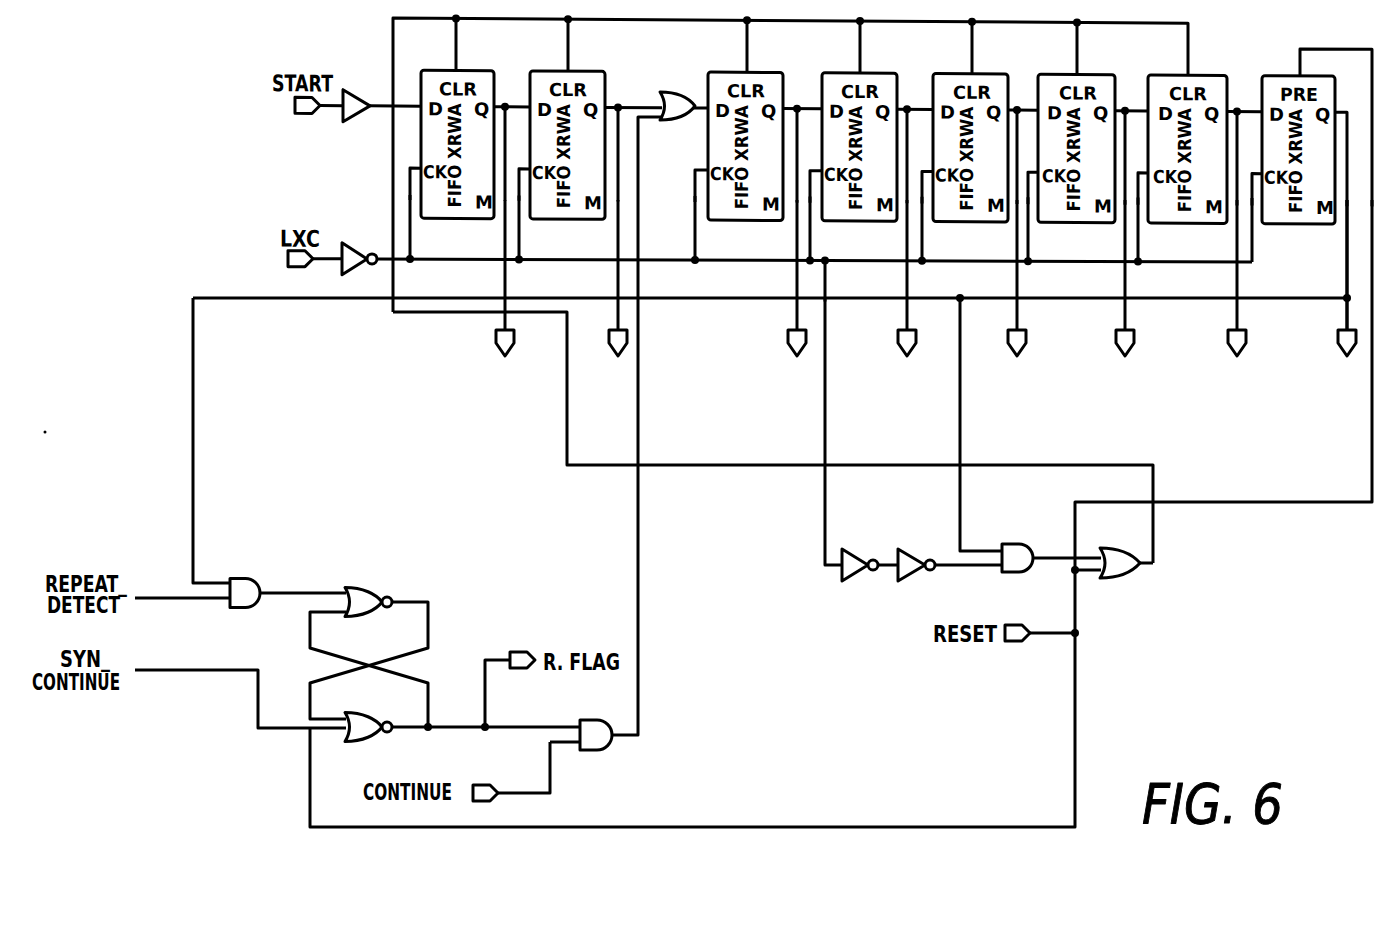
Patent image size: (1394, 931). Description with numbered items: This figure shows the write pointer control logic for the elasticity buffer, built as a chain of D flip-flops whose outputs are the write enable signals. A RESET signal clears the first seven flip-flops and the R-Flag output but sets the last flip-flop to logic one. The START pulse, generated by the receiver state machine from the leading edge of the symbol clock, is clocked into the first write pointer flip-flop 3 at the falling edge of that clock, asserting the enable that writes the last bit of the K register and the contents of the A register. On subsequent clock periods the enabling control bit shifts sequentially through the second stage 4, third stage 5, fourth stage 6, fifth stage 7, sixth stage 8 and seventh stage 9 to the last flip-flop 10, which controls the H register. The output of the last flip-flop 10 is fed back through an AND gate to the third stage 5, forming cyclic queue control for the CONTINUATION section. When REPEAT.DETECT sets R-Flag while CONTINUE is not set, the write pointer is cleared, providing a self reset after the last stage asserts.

The FXW3 output 3 is at (505, 317).
The FXW4 output 4 is at (618, 317).
The FXW5 output 5 is at (797, 317).
The FXW6 output 6 is at (907, 317).
The FXW7 output 7 is at (1017, 317).
The FXW8 output 8 is at (1125, 317).
The FXW9 output 9 is at (1237, 317).
The elasticity buffer 10 is at (1347, 319).